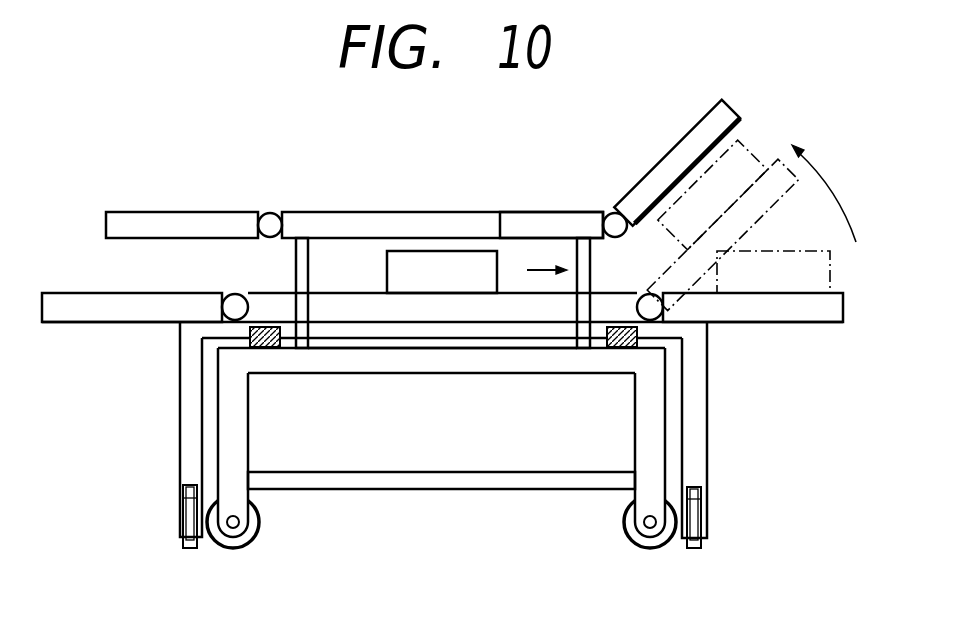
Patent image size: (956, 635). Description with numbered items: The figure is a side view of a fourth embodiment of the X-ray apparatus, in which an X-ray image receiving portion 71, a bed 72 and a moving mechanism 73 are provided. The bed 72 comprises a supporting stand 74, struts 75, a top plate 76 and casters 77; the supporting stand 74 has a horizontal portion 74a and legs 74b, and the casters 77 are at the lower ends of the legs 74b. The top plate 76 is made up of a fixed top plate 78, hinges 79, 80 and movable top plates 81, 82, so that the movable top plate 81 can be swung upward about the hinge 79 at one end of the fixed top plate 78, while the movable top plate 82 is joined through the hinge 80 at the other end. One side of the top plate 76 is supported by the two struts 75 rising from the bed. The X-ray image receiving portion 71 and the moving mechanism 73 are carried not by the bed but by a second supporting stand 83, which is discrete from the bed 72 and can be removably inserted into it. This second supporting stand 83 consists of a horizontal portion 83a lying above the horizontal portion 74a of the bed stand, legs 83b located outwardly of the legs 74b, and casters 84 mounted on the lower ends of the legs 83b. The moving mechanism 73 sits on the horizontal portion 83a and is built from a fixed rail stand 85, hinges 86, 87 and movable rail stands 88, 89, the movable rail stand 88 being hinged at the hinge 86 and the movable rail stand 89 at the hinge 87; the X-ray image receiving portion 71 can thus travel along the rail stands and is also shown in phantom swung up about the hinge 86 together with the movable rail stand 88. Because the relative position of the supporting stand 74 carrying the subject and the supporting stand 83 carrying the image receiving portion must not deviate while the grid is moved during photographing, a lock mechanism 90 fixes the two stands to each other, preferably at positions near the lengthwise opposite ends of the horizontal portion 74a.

The X-ray image receiving portion 71 is at (407, 270).
The bed 72 is at (219, 188).
The moving mechanism 73 is at (343, 283).
The supporting stand 74 is at (677, 417).
The horizontal portion 74a is at (360, 362).
The legs 74b is at (230, 415).
The struts 75 is at (294, 267).
The top plate 76 is at (447, 202).
The casters 77 is at (632, 542).
The fixed top plate 78 is at (560, 223).
The hinge 79 is at (612, 214).
The hinge 80 is at (270, 222).
The movable top plate 81 is at (718, 117).
The movable top plate 82 is at (138, 222).
The second supporting stand 83 is at (718, 463).
The horizontal portion 83a is at (487, 326).
The legs 83b is at (188, 465).
The casters 84 is at (694, 520).
The fixed rail stand 85 is at (475, 308).
The hinge 86 is at (657, 320).
The hinge 87 is at (237, 313).
The movable rail stand 88 is at (805, 315).
The movable rail stand 89 is at (83, 315).
The lock mechanism 90 is at (258, 350).